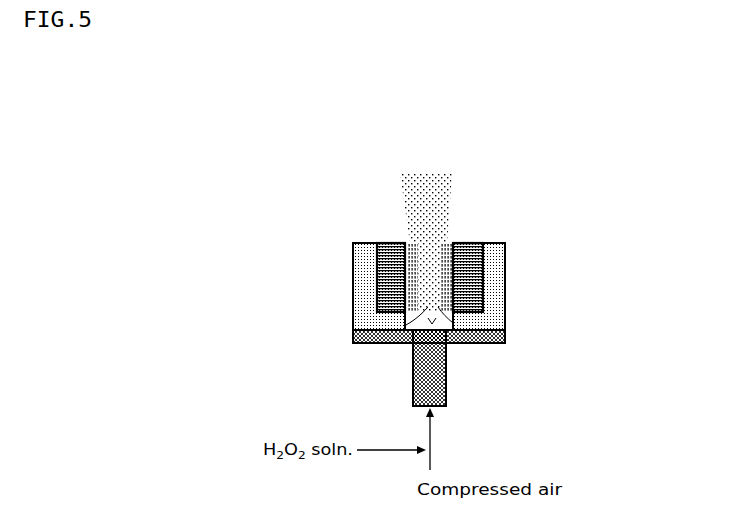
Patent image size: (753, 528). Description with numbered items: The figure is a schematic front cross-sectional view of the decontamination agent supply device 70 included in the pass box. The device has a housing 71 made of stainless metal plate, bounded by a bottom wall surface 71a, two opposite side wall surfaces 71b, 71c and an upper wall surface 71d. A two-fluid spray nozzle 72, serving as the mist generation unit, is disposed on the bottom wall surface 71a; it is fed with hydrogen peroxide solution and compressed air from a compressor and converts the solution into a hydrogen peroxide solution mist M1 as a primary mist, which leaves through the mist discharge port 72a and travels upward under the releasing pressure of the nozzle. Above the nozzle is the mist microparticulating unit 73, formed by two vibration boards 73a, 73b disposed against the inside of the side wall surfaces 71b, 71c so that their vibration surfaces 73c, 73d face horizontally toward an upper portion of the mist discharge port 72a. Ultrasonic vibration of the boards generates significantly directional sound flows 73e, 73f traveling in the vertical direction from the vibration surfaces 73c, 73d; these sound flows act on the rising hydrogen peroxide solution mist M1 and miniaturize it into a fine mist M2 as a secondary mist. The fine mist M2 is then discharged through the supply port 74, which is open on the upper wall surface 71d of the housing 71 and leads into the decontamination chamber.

The decontamination agent supply device 70 is at (361, 159).
The housing 71 is at (352, 281).
The bottom wall surface 71a is at (360, 343).
The side wall surface 71b is at (483, 292).
The side wall surface 71c is at (377, 297).
The upper wall surface 71d is at (365, 243).
The two-fluid spray nozzle 72 is at (446, 395).
The mist discharge port 72a is at (465, 343).
The mist microparticulating unit 73 is at (437, 284).
The vibration board 73a is at (470, 243).
The vibration board 73b is at (392, 243).
The vibration surface 73c is at (505, 247).
The vibration surface 73d is at (353, 248).
The sound flow 73e is at (506, 322).
The sound flow 73f is at (352, 330).
The supply port 74 is at (456, 243).
The hydrogen peroxide solution mist M1 is at (385, 343).
The fine mist M2 is at (449, 238).